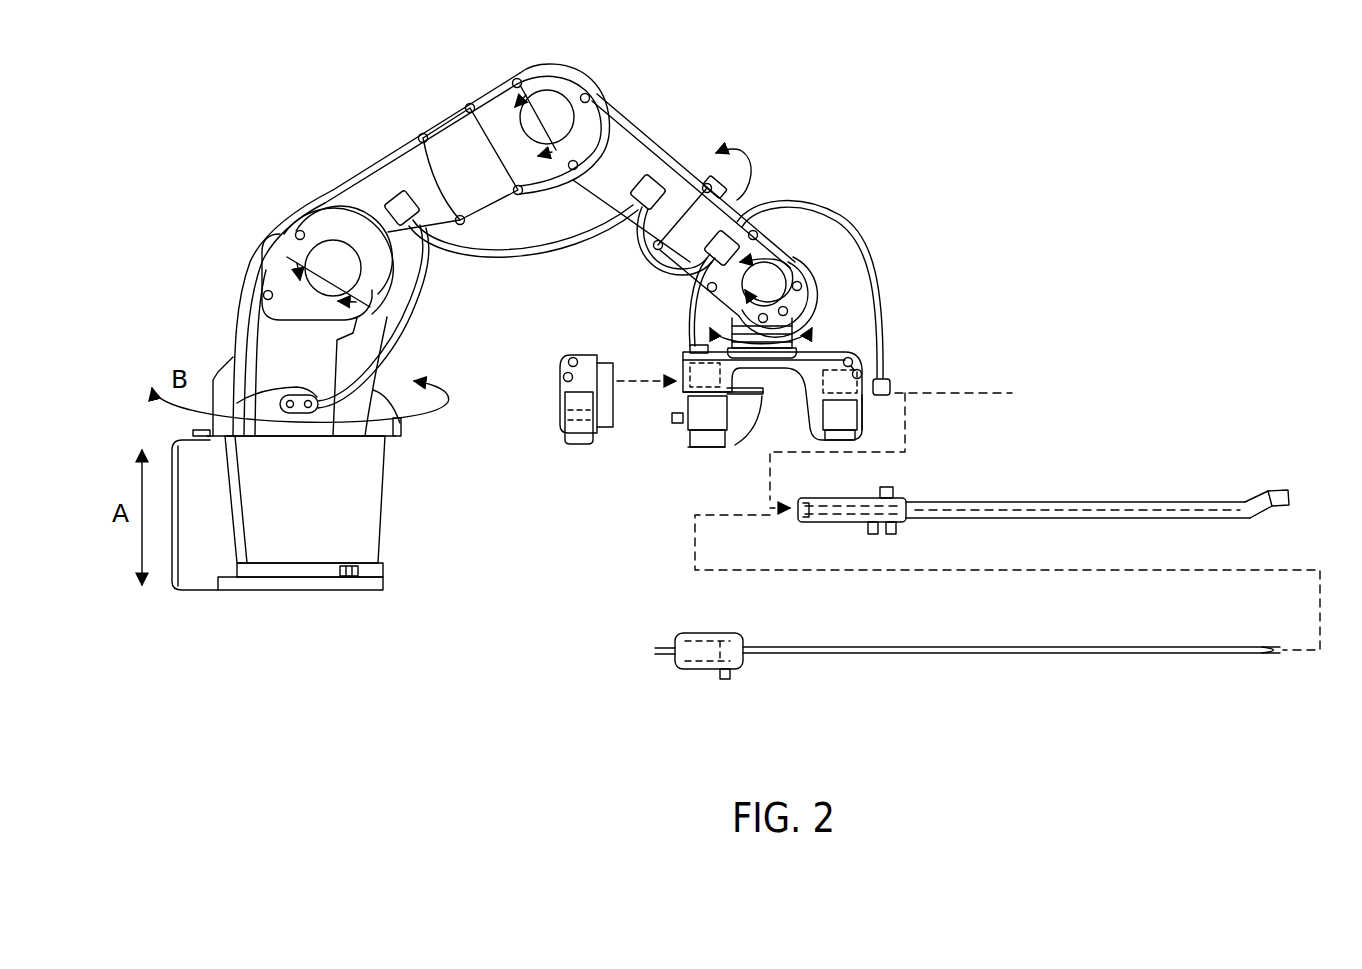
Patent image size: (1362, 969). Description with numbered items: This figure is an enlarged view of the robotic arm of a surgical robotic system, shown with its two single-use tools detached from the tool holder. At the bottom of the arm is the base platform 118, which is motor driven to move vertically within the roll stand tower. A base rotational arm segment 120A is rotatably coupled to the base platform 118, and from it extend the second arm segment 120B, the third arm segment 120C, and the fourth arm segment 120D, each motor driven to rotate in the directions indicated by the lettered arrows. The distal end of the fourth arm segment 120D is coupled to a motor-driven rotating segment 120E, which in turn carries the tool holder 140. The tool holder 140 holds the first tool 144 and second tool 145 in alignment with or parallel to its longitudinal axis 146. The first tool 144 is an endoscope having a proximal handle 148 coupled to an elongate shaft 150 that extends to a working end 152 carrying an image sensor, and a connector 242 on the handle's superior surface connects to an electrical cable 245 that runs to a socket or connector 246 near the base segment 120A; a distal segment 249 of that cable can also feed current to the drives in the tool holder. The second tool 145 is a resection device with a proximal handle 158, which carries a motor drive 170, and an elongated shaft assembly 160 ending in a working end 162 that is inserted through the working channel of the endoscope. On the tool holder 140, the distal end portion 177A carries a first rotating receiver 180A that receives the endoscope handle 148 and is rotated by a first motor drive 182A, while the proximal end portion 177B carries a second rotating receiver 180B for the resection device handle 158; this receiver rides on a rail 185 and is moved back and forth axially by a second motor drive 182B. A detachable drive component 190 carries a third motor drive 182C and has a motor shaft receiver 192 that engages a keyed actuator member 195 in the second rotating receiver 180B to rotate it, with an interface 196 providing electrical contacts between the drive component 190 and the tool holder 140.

The base platform 118 is at (374, 496).
The base rotational arm segment 120A is at (250, 330).
The second arm segment 120B is at (358, 188).
The third arm segment 120C is at (657, 160).
The fourth arm segment 120D is at (742, 204).
The rotating segment 120E is at (828, 308).
The tool holder 140 is at (827, 352).
The first tool (endoscope) 144 is at (1072, 491).
The second tool (resection device) 145 is at (981, 650).
The longitudinal axis 146 is at (1015, 389).
The proximal handle 148 is at (905, 522).
The elongate shaft 150 is at (1141, 502).
The working end 152 is at (1266, 481).
The proximal handle 158 is at (743, 667).
The elongated shaft assembly 160 is at (999, 645).
The working end 162 is at (1232, 637).
The motor drive 170 is at (707, 662).
The distal end portion 177A is at (860, 367).
The proximal end portion 177B is at (690, 349).
The first rotating receiver 180A is at (884, 423).
The second rotating receiver 180B is at (686, 450).
The first motor drive 182A is at (890, 388).
The second motor drive 182B is at (690, 370).
The third motor drive 182C is at (560, 397).
The rail 185 is at (758, 410).
The detachable drive component 190 is at (568, 362).
The motor shaft receiver 192 is at (565, 424).
The keyed actuator member 195 is at (675, 421).
The interface 196 is at (683, 393).
The connector 242 is at (890, 489).
The electrical cable 245 is at (846, 230).
The socket or connector 246 is at (280, 404).
The distal segment 249 is at (688, 296).